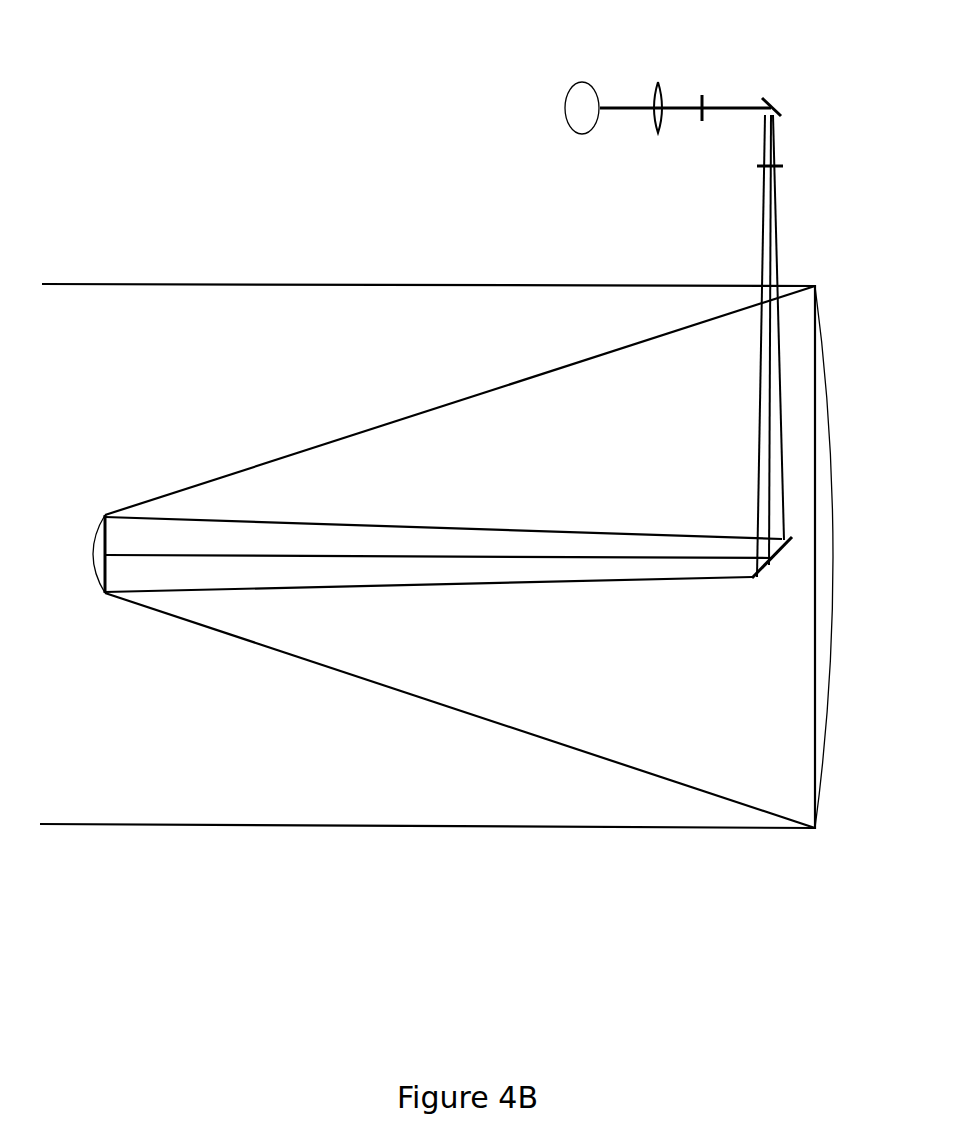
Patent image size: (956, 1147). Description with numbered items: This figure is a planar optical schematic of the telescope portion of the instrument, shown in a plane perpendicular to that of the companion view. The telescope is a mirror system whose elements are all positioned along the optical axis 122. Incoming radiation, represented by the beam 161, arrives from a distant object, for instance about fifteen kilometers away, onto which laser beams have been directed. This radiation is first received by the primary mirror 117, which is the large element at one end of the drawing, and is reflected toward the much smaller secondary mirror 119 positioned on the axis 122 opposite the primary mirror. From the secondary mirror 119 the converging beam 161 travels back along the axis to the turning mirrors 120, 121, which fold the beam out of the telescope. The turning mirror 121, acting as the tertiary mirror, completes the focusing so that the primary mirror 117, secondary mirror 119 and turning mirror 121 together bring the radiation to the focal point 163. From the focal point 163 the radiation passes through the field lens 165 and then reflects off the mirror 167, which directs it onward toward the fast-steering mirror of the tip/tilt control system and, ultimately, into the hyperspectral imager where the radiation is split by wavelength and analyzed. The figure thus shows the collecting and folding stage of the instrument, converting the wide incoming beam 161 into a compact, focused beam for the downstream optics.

The primary mirror 117 is at (436, 556).
The secondary mirror 119 is at (61, 519).
The turning mirror 120 is at (724, 392).
The turning mirror 121 is at (727, 69).
The optical axis 122 is at (438, 597).
The beam 161 is at (460, 596).
The focal point 163 is at (745, 67).
The field lens 165 is at (617, 71).
The mirror 167 is at (542, 142).